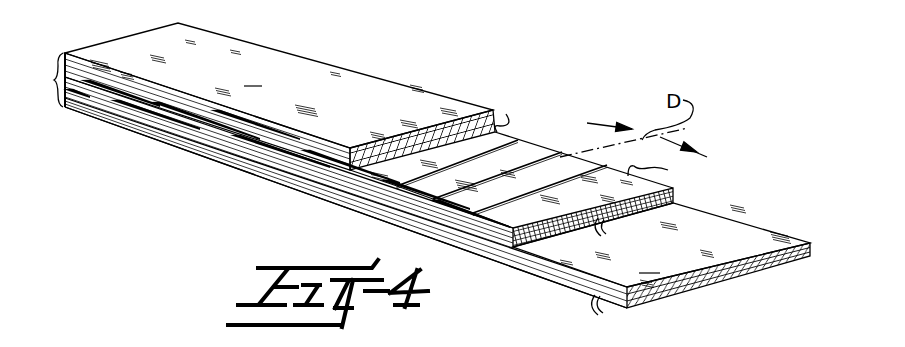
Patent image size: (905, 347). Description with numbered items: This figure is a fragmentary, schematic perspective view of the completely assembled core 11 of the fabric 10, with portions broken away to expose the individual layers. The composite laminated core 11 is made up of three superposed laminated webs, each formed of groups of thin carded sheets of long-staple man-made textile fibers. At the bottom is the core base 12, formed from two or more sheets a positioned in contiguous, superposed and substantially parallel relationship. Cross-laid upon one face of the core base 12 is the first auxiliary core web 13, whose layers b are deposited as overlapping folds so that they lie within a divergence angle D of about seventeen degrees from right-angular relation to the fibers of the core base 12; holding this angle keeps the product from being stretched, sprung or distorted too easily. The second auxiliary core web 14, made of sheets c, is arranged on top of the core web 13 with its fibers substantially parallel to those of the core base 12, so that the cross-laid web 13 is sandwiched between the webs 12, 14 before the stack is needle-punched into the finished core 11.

The fabric 10 is at (346, 227).
The composite laminated core 11 is at (48, 63).
The core base 12 is at (722, 217).
The first auxiliary core web 13 is at (510, 133).
The second auxiliary core web 14 is at (367, 73).